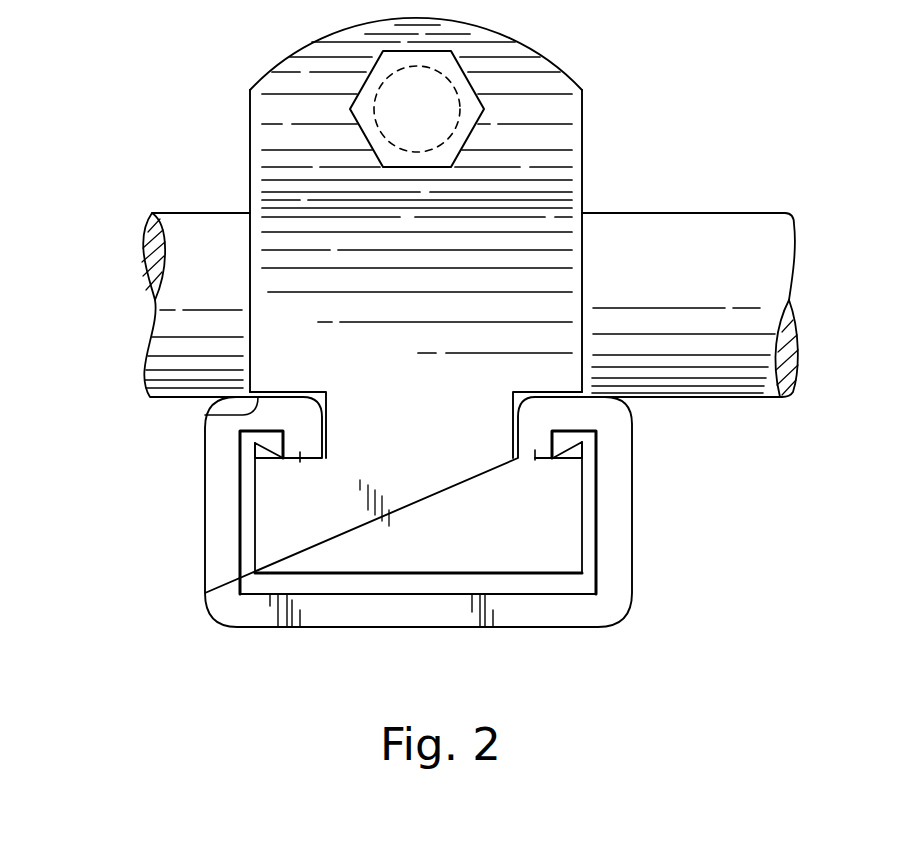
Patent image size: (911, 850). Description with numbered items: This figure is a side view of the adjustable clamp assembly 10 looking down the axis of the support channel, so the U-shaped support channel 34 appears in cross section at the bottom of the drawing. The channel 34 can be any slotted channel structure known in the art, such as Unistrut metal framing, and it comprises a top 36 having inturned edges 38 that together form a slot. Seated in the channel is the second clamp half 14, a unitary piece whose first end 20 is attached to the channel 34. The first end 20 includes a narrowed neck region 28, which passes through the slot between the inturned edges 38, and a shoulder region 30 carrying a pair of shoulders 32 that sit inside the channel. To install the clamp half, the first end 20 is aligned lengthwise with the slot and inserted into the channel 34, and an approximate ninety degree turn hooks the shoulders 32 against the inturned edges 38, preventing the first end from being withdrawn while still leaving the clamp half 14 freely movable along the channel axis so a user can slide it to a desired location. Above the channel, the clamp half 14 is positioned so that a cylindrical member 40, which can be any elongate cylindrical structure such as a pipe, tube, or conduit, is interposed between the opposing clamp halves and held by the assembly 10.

The clamp assembly 10 is at (645, 78).
The second clamp half 14 is at (255, 172).
The first end 20 is at (387, 588).
The narrowed neck region 28 is at (433, 443).
The shoulder region 30 is at (517, 534).
The shoulders 32 is at (256, 447).
The U-shaped support channel 34 is at (530, 627).
The top 36 is at (205, 415).
The inturned edges 38 is at (300, 462).
The cylindrical member 40 is at (667, 213).